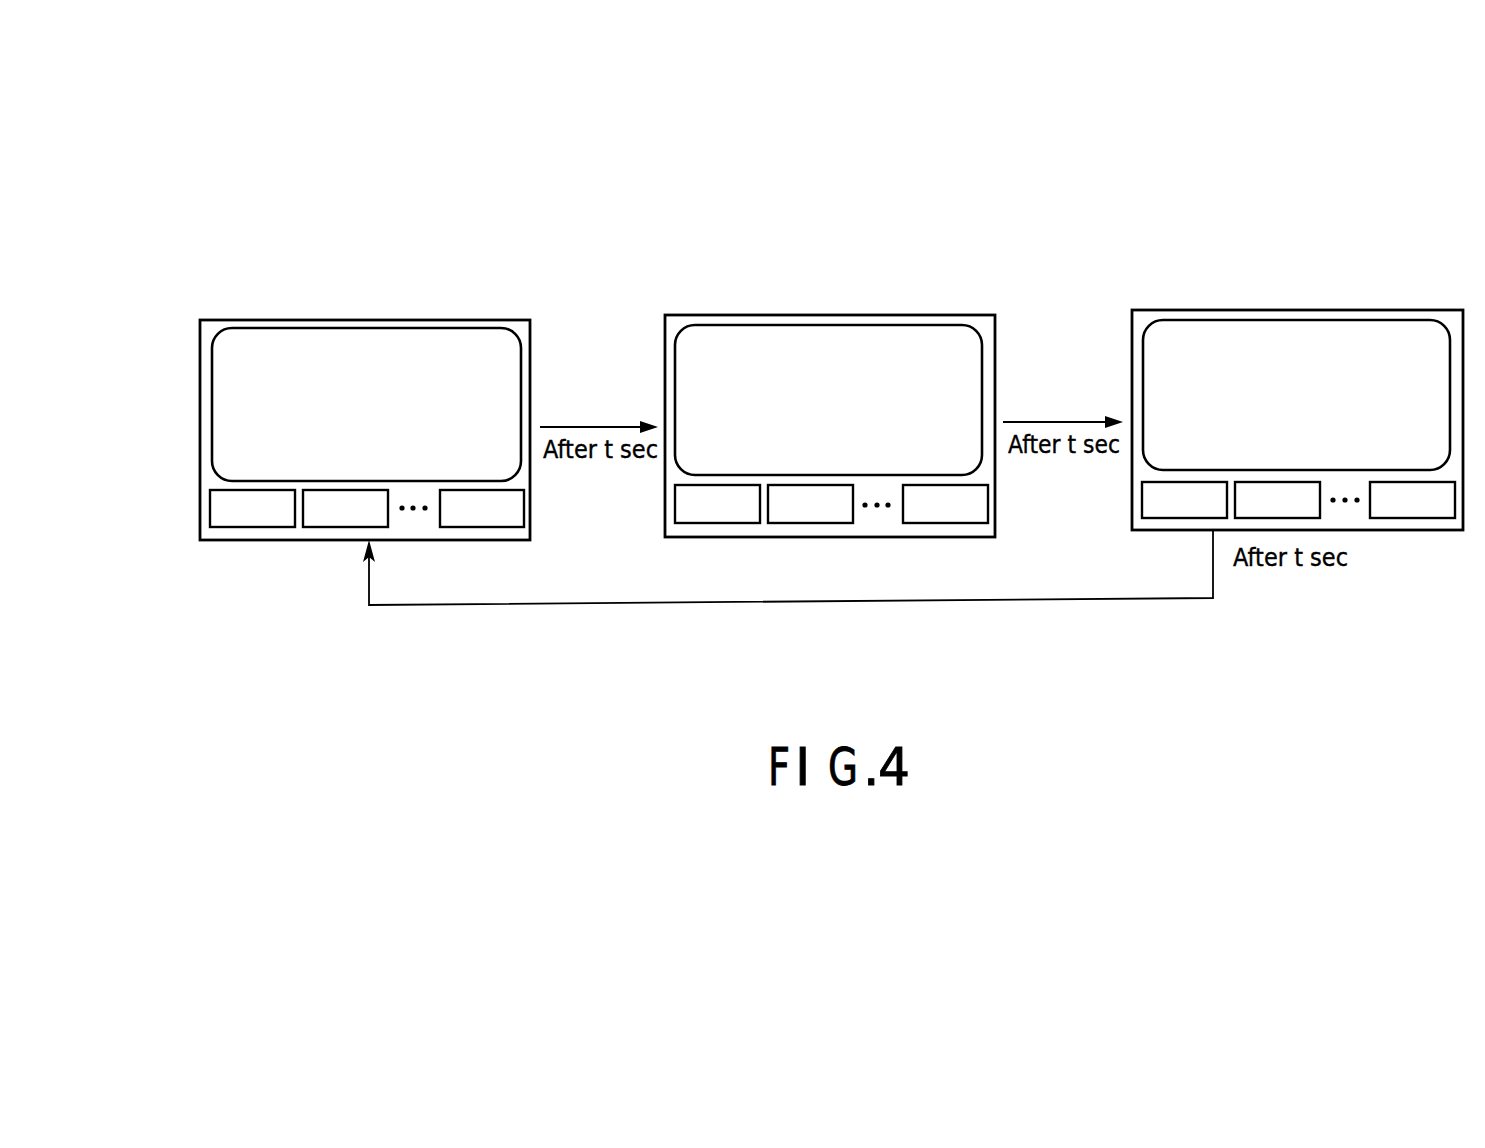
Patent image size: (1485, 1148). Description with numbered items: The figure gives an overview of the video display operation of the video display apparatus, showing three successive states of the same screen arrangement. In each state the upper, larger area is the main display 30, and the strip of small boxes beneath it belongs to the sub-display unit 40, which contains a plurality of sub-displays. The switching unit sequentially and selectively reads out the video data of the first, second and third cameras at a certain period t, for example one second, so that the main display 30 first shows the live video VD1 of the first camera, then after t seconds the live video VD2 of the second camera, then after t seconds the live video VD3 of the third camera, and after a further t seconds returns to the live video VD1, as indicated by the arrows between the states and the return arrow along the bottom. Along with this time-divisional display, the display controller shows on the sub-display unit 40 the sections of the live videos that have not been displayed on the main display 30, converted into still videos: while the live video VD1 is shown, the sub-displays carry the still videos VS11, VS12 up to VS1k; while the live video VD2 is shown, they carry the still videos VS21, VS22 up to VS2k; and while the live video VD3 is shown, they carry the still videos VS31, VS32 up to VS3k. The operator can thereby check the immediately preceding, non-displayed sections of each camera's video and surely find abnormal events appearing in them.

The main display 30 is at (831, 361).
The sub-display unit 40 is at (320, 497).
The live video VD1 is at (367, 407).
The live video VD2 is at (832, 403).
The live video VD3 is at (1298, 397).
The video summary thumbnail VS11 is at (252, 508).
The video summary thumbnail VS12 is at (345, 508).
The video summary thumbnail VS1k is at (482, 508).
The video summary thumbnail VS21 is at (717, 504).
The video summary thumbnail VS22 is at (810, 504).
The video summary thumbnail VS2k is at (945, 504).
The video summary thumbnail VS31 is at (1184, 500).
The video summary thumbnail VS32 is at (1277, 500).
The video summary thumbnail VS3k is at (1412, 500).